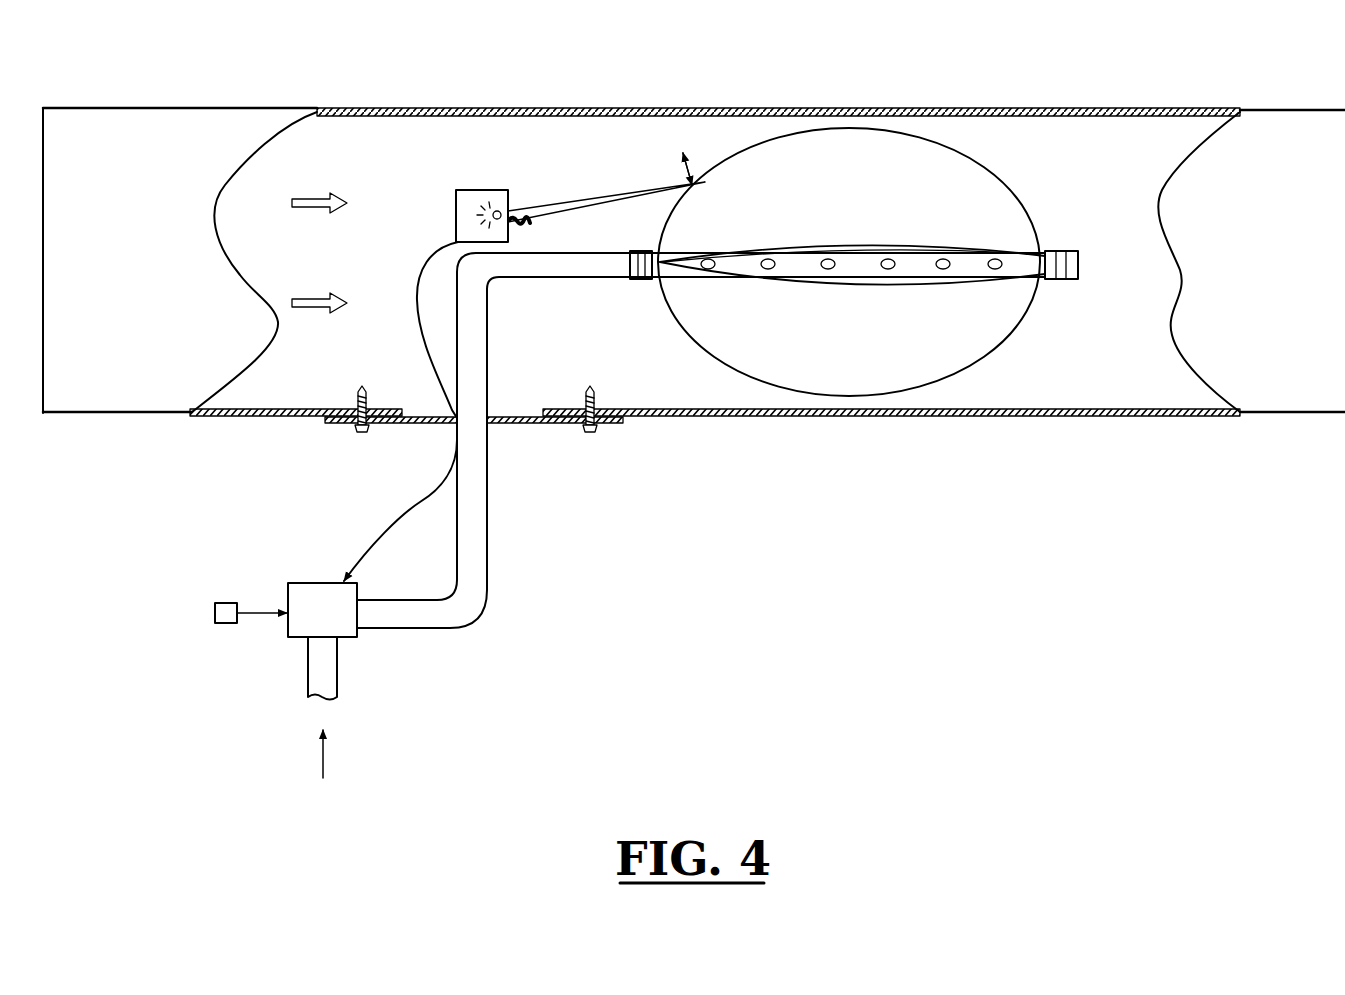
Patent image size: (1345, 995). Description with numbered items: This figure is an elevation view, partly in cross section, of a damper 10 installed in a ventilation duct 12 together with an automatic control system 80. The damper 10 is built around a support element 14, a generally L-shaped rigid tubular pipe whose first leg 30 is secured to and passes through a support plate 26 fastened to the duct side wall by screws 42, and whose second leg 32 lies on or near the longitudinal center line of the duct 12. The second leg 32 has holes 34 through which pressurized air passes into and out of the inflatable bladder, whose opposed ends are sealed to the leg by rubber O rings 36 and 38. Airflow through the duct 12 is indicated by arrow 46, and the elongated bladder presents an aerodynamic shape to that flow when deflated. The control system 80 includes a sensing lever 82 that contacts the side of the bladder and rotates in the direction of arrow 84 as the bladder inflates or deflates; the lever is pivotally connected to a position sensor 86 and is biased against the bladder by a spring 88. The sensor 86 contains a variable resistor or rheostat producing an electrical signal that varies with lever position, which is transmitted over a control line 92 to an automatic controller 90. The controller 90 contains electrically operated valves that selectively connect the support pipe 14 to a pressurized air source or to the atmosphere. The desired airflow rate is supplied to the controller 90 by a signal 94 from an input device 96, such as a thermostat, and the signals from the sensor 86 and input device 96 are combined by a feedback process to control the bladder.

The damper 10 is at (612, 128).
The ventilation duct 12 is at (946, 106).
The support element 14 is at (470, 268).
The support plate 26 is at (418, 425).
The first leg 30 is at (489, 330).
The second leg 32 is at (905, 242).
The holes 34 is at (998, 270).
The rubber O ring 36 is at (638, 280).
The rubber O ring 38 is at (1052, 250).
The screws 42 is at (358, 433).
The arrow 46 is at (305, 297).
The control system 80 is at (465, 204).
The sensing lever 82 is at (600, 197).
The arrow 84 is at (688, 168).
The position sensor 86 is at (456, 206).
The spring 88 is at (526, 225).
The automatic pressure regulator or controller 90 is at (333, 627).
The control line 92 is at (385, 532).
The signal 94 is at (257, 608).
The input device 96 is at (228, 626).